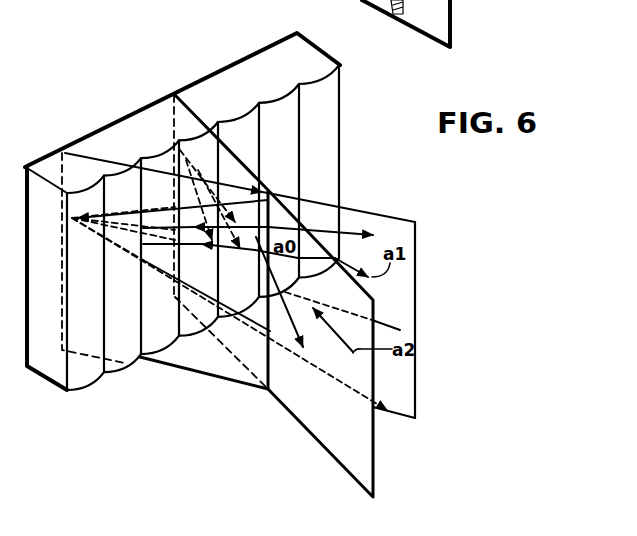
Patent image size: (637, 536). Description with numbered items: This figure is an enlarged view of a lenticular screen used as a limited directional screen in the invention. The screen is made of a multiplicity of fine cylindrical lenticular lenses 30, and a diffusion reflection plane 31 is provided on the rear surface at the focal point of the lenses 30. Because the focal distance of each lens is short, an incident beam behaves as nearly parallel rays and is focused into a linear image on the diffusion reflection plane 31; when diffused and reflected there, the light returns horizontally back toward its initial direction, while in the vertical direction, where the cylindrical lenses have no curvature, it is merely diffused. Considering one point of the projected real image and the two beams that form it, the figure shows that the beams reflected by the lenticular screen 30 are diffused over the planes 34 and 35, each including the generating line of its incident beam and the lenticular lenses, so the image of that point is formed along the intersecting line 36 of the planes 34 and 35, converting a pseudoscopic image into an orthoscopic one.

The lenticular lenses 30 is at (322, 67).
The diffusion reflection plane 31 is at (268, 44).
The plane 34 is at (407, 220).
The plane 35 is at (374, 479).
The intersecting line 36 is at (258, 380).